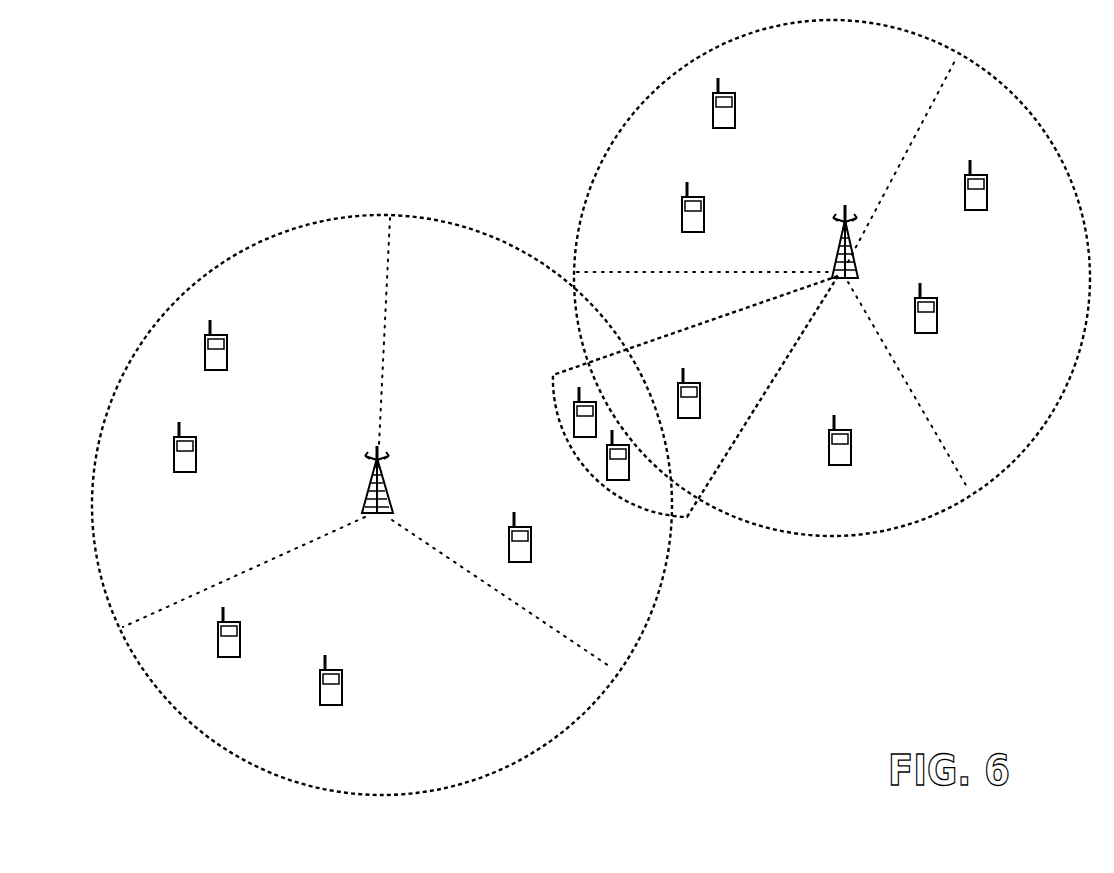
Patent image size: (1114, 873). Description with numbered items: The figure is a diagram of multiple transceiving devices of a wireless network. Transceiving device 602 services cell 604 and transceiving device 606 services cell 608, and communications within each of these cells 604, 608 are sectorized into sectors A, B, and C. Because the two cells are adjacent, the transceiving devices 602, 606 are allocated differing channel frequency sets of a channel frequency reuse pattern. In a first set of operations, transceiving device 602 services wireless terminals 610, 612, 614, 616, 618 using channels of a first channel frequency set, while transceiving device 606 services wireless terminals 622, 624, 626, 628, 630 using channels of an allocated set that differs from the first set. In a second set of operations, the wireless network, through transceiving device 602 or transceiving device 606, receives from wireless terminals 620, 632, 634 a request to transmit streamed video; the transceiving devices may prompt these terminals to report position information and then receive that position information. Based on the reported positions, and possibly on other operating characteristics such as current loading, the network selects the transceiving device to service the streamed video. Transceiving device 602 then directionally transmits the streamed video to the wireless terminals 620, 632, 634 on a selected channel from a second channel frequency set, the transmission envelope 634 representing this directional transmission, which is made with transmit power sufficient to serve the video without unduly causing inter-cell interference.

The transceiving device 602 is at (847, 280).
The cell 604 is at (652, 97).
The transceiving device 606 is at (381, 516).
The cell 608 is at (148, 337).
The wireless terminal 610 is at (735, 118).
The wireless terminal 612 is at (704, 222).
The wireless terminal 614 is at (987, 200).
The wireless terminal 616 is at (937, 323).
The wireless terminal 618 is at (851, 455).
The wireless terminal 620 is at (697, 384).
The wireless terminal 622 is at (227, 360).
The wireless terminal 624 is at (196, 462).
The wireless terminal 626 is at (240, 647).
The wireless terminal 628 is at (342, 695).
The wireless terminal 630 is at (531, 552).
The wireless terminal 632 is at (574, 420).
The transmission envelope 634 is at (607, 466).